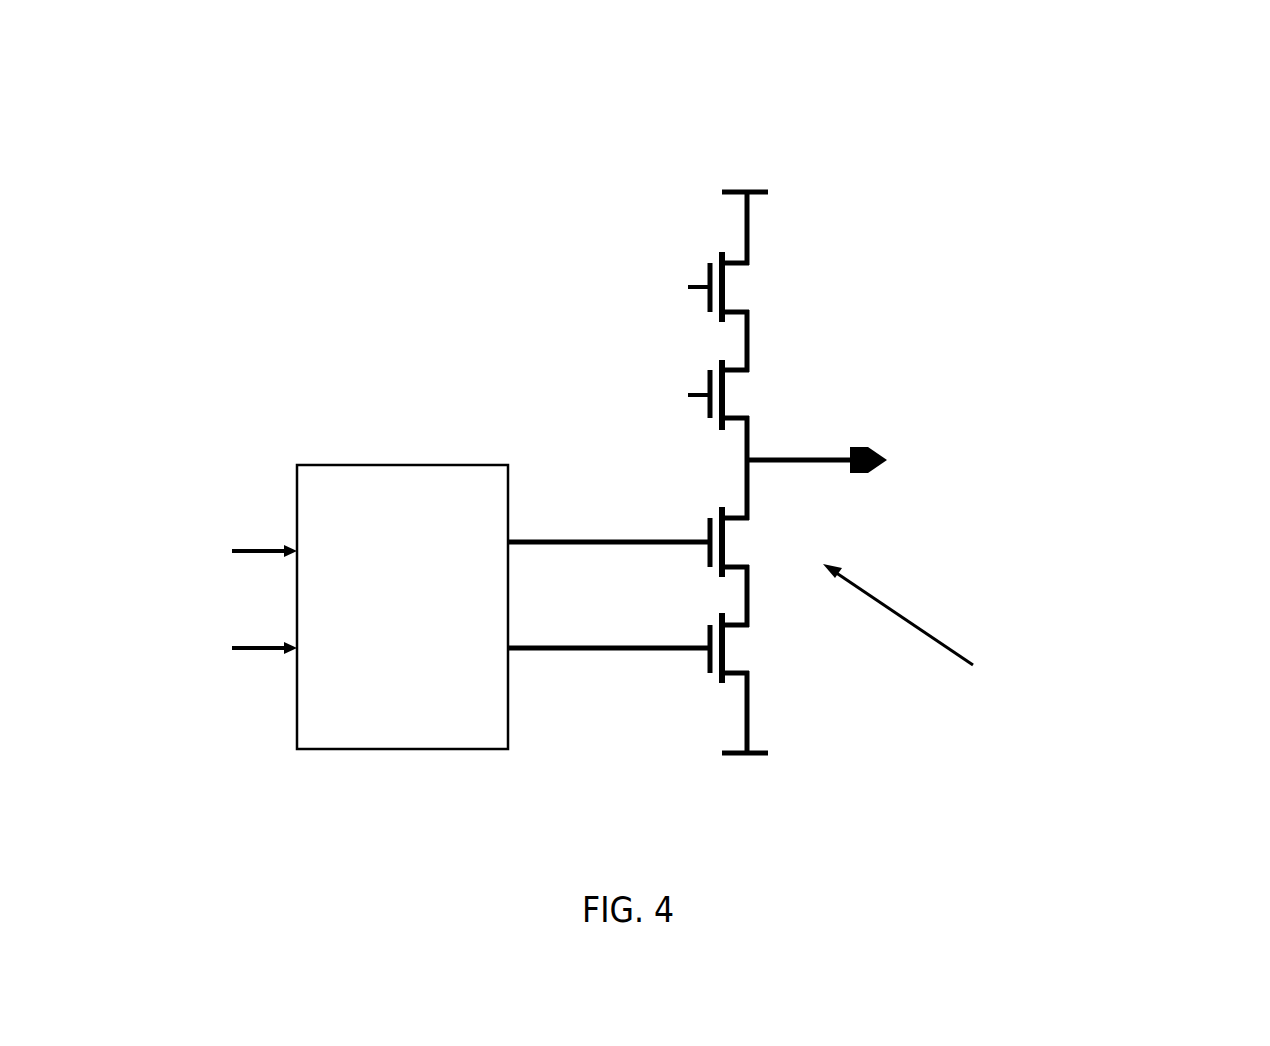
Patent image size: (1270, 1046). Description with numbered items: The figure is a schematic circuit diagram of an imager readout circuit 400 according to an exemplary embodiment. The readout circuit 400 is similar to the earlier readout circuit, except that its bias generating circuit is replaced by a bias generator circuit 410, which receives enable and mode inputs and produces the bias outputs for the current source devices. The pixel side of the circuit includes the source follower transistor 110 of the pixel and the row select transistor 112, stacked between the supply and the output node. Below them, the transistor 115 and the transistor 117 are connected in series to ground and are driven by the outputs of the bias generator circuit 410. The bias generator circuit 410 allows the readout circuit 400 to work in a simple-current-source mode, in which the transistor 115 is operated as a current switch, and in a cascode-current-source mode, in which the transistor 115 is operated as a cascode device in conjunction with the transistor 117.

The imager readout circuit 400 is at (991, 47).
The bias generator circuit 410 is at (366, 456).
The source follower transistor 110 is at (736, 287).
The row select transistor 112 is at (736, 395).
The transistor 115 is at (747, 542).
The transistor 117 is at (747, 648).